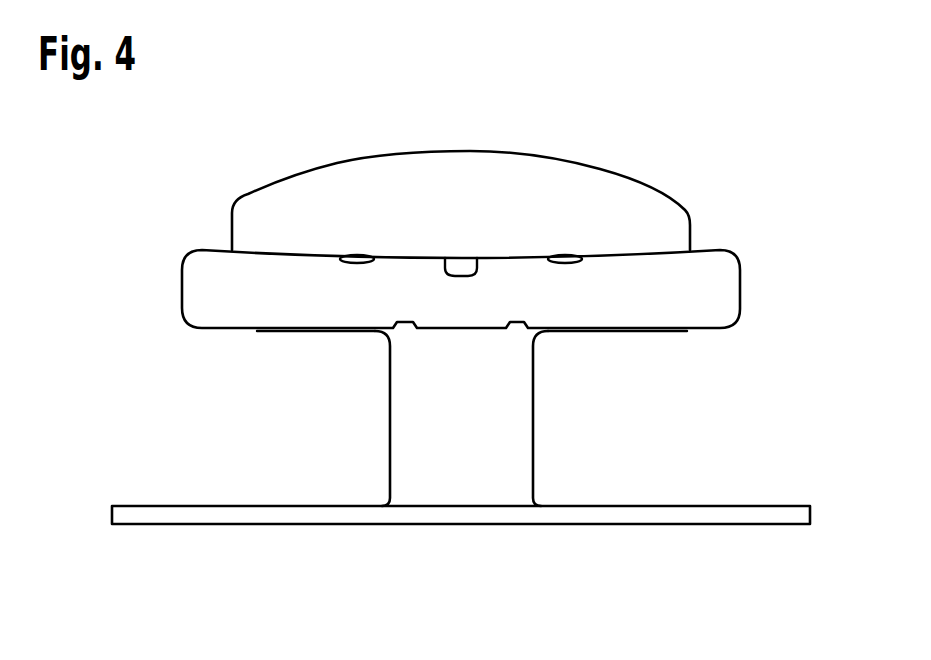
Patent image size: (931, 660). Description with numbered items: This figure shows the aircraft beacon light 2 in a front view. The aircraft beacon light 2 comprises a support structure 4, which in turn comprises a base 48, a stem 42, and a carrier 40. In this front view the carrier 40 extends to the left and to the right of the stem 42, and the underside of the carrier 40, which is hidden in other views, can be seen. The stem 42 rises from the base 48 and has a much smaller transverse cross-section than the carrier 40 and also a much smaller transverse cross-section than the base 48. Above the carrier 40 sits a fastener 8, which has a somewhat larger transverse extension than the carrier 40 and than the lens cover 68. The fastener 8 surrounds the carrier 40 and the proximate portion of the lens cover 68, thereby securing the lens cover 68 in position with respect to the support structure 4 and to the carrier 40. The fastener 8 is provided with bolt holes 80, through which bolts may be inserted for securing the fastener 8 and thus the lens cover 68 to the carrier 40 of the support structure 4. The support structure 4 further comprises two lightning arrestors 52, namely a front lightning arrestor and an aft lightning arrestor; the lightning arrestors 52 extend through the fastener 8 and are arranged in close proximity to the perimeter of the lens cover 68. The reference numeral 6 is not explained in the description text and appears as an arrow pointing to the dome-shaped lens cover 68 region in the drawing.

The aircraft beacon light 2 is at (760, 242).
The support structure 4 is at (772, 407).
The cover 6 is at (266, 139).
The fastener 8 is at (741, 302).
The carrier 40 is at (313, 332).
The stem 42 is at (390, 437).
The base 48 is at (280, 525).
The lightning arrestors 52 is at (462, 275).
The lens cover 68 is at (528, 152).
The bolt holes 80 is at (357, 255).